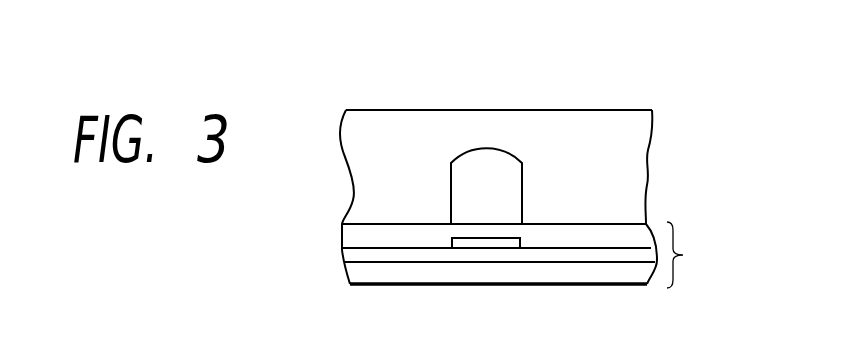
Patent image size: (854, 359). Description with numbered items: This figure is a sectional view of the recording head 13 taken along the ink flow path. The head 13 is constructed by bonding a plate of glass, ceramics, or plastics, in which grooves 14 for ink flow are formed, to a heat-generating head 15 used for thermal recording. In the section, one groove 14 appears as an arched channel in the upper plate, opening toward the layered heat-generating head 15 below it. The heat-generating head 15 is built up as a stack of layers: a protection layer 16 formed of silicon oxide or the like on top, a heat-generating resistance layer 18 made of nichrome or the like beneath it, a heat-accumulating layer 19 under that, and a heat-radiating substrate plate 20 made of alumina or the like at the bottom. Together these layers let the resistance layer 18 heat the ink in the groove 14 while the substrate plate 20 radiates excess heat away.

The head 13 is at (389, 109).
The grooves 14 is at (488, 148).
The heat-generating head 15 is at (687, 255).
The protection layer 16 is at (570, 233).
The heat-generating resistance layer 18 is at (520, 243).
The heat-accumulating layer 19 is at (617, 258).
The heat-radiating substrate plate 20 is at (577, 272).